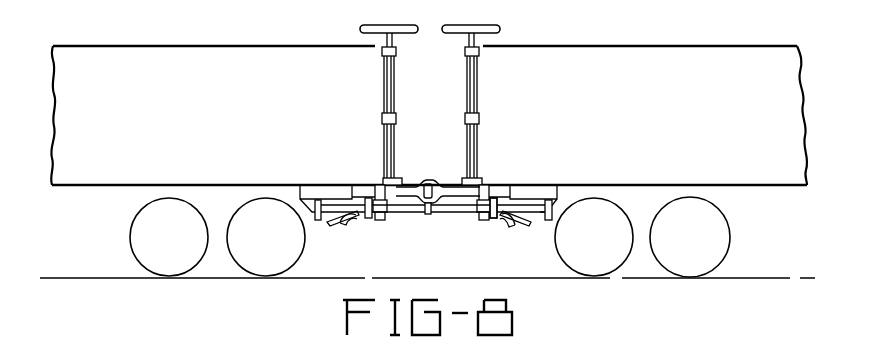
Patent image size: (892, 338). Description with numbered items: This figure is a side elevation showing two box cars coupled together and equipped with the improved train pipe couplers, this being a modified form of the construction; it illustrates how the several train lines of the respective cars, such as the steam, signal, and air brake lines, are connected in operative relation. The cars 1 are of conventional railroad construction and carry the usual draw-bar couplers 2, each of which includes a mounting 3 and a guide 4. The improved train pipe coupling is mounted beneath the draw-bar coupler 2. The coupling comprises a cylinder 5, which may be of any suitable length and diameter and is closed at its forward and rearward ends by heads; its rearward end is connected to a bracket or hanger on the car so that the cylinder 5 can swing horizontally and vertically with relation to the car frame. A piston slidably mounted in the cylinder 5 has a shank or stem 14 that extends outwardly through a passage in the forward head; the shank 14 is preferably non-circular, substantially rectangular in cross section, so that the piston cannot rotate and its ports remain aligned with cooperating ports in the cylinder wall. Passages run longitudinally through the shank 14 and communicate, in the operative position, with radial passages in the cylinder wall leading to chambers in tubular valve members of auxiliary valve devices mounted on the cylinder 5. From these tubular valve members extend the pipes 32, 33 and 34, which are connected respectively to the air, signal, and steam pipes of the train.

The car 1 is at (429, 115).
The draw-bar coupler 2 is at (438, 183).
The mounting 3 is at (322, 189).
The guide 4 is at (378, 189).
The cylinder 5 is at (498, 219).
The shank 14 is at (420, 213).
The pipe 32 is at (527, 222).
The pipe 33 is at (336, 222).
The pipe 34 is at (347, 224).